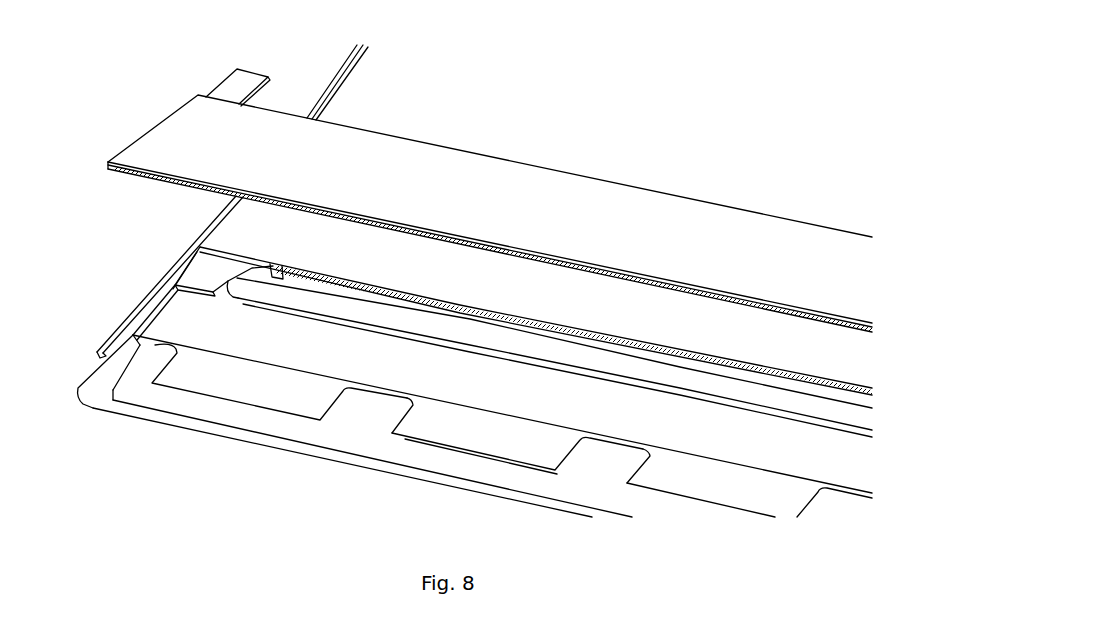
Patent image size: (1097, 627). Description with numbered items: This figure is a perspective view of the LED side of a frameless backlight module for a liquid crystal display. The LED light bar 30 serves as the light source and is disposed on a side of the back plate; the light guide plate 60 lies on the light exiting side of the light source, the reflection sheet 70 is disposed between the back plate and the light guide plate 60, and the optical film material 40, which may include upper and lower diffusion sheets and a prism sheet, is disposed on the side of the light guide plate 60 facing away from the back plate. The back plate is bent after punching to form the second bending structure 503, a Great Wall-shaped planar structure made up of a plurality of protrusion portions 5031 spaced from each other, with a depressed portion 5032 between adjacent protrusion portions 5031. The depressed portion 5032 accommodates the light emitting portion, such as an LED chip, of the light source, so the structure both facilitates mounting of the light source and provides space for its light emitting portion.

The LED light bar 30 is at (400, 153).
The optical film material 40 is at (243, 224).
The light guide plate 60 is at (213, 313).
The reflection sheet 70 is at (130, 370).
The second bending structure 503 is at (467, 426).
The protrusion portions 5031 is at (358, 412).
The depressed portion 5032 is at (290, 401).